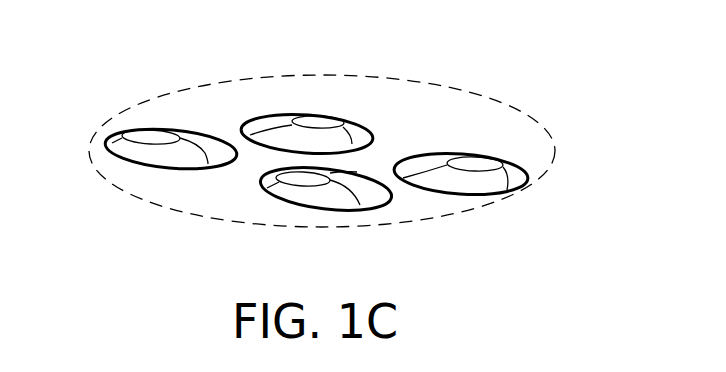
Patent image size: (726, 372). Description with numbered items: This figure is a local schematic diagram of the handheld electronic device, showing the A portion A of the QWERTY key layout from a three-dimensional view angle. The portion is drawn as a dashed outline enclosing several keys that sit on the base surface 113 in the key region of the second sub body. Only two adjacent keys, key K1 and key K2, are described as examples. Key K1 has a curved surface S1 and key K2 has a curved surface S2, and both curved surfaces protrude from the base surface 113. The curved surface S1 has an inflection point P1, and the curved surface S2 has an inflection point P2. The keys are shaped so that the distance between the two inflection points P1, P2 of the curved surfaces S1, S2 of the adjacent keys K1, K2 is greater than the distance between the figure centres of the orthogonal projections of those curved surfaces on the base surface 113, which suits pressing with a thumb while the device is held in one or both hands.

The key K1 is at (118, 128).
The inflection point P1 is at (150, 135).
The curved surface S1 is at (205, 143).
The key K2 is at (248, 118).
The inflection point P2 is at (319, 120).
The curved surface S2 is at (364, 129).
The base surface 113 is at (452, 126).
The A portion A is at (522, 108).